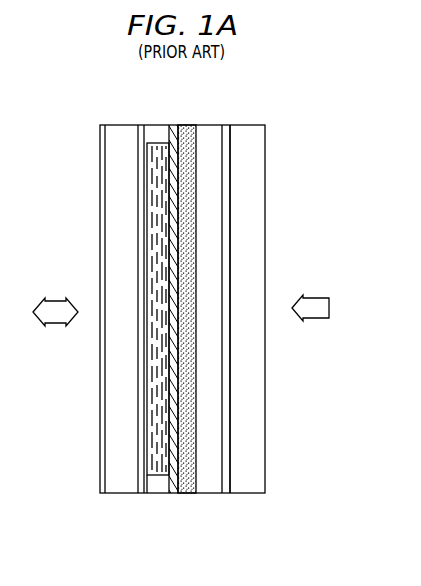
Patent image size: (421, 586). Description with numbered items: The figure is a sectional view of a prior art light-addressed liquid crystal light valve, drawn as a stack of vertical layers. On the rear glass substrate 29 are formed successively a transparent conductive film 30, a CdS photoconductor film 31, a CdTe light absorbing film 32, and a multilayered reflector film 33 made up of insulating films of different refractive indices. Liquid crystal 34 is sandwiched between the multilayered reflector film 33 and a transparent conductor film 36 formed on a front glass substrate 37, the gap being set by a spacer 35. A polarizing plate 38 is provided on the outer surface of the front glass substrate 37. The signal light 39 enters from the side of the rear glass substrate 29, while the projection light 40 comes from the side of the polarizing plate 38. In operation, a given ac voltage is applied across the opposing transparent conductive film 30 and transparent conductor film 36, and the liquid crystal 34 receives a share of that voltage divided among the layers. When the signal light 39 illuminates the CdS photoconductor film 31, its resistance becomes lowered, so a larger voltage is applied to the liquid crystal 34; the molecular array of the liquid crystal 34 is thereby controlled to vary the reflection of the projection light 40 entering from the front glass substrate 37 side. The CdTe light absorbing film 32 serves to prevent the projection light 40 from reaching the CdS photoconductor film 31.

The rear glass substrate 29 is at (266, 131).
The transparent conductive film 30 is at (226, 131).
The CdS photoconductor film 31 is at (207, 132).
The CdTe light absorbing film 32 is at (182, 131).
The multilayered reflector film 33 is at (177, 484).
The liquid crystal 34 is at (157, 152).
The spacer 35 is at (158, 484).
The transparent conductor film 36 is at (142, 131).
The front glass substrate 37 is at (117, 131).
The polarizing plate 38 is at (98, 132).
The signal light 39 is at (315, 296).
The projection light 40 is at (55, 298).